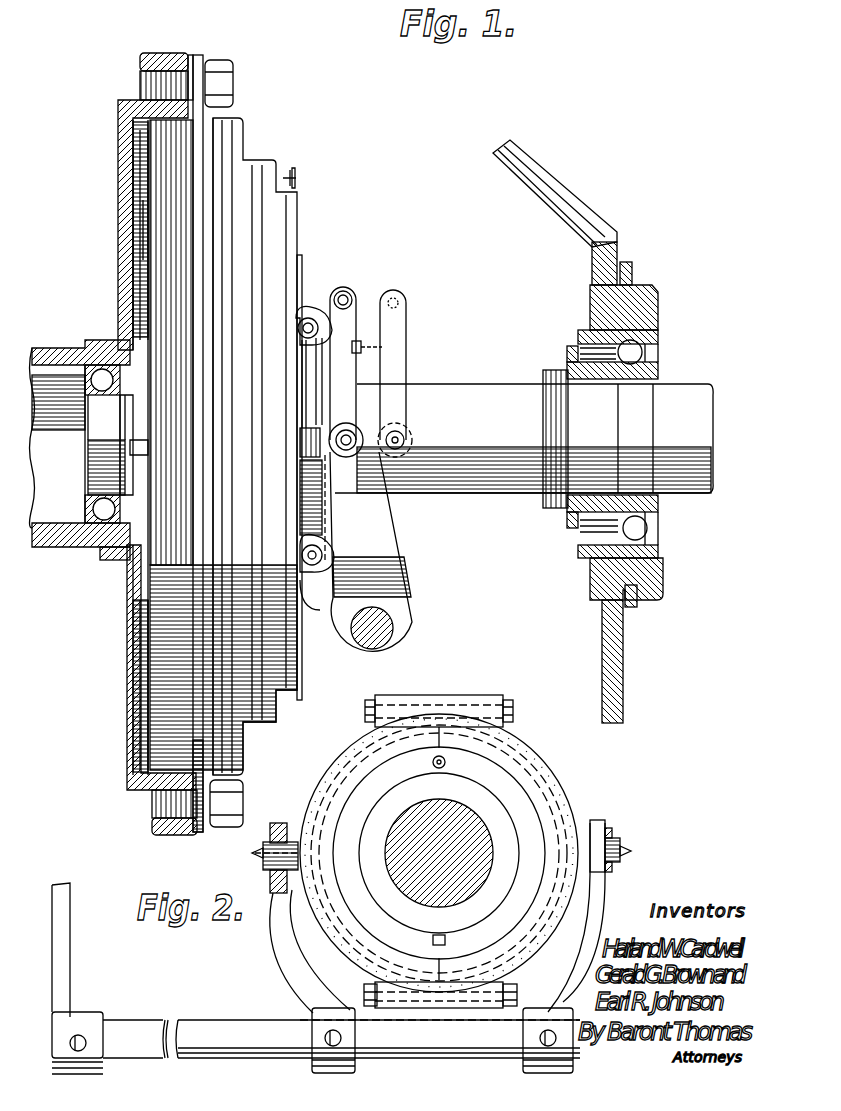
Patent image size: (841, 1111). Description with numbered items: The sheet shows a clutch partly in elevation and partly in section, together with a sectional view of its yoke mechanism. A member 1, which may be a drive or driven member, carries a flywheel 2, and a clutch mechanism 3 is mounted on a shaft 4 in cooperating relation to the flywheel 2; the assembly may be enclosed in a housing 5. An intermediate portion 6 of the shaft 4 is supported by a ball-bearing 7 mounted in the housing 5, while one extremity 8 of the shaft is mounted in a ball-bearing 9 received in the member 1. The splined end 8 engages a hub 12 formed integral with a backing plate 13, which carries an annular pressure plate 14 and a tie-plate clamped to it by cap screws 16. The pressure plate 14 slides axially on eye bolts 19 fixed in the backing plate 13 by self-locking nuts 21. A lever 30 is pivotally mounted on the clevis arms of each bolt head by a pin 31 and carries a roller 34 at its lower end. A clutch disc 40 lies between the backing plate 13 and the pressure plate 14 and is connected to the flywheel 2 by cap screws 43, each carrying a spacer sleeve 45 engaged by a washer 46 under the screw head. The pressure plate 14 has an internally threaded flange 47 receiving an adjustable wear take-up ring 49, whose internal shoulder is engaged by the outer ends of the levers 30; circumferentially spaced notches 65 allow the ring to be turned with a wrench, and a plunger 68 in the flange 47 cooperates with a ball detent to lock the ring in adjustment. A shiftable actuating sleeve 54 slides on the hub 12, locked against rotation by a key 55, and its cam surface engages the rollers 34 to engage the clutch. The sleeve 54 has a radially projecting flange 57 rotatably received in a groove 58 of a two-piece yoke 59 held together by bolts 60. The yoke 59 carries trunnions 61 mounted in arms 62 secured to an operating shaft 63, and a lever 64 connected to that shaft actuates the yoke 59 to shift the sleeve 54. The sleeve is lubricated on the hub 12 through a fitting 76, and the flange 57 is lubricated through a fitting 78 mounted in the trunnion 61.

In FIG. 1, the member 1 is at (55, 548).
In FIG. 1, the flywheel 2 is at (118, 116).
In FIG. 1, the clutch mechanism 3 is at (133, 200).
In FIG. 1, the shaft 4 is at (512, 490).
In FIG. 2, the shaft 4 is at (460, 826).
In FIG. 1, the housing 5 is at (560, 188).
In FIG. 1, the intermediate portion 6 is at (598, 439).
In FIG. 1, the ball-bearing 7 is at (658, 348).
In FIG. 1, the extremity 8 is at (90, 470).
In FIG. 1, the ball-bearing 9 is at (98, 368).
In FIG. 2, the hub 12 is at (392, 798).
In FIG. 1, the backing plate 13 is at (148, 290).
In FIG. 1, the annular pressure plate 14 is at (243, 140).
In FIG. 1, the cap screws 16 is at (133, 315).
In FIG. 1, the eye bolts 19 is at (136, 244).
In FIG. 1, the self-locking nut 21 is at (133, 218).
In FIG. 1, the lever 30 is at (300, 440).
In FIG. 1, the pin 31 is at (315, 338).
In FIG. 1, the roller 34 is at (298, 327).
In FIG. 1, the clutch disc 40 is at (195, 52).
In FIG. 1, the cap screws 43 is at (225, 60).
In FIG. 1, the spacer sleeve 45 is at (180, 52).
In FIG. 1, the washer 46 is at (200, 60).
In FIG. 1, the flange 47 is at (262, 178).
In FIG. 1, the wear take-up ring 49 is at (298, 226).
In FIG. 1, the actuating sleeve 54 is at (322, 376).
In FIG. 2, the actuating sleeve 54 is at (364, 922).
In FIG. 2, the key 55 is at (446, 938).
In FIG. 2, the flange 57 is at (572, 779).
In FIG. 2, the groove 58 is at (540, 752).
In FIG. 1, the yoke 59 is at (358, 312).
In FIG. 2, the yoke 59 is at (488, 695).
In FIG. 1, the bolts 60 is at (346, 290).
In FIG. 2, the bolts 60 is at (513, 710).
In FIG. 1, the trunnions 61 is at (346, 423).
In FIG. 2, the trunnions 61 is at (262, 862).
In FIG. 1, the arms 62 is at (392, 560).
In FIG. 2, the arms 62 is at (290, 966).
In FIG. 1, the operating shaft 63 is at (362, 646).
In FIG. 2, the operating shaft 63 is at (210, 1020).
In FIG. 2, the lever 64 is at (58, 932).
In FIG. 1, the notches 65 is at (302, 258).
In FIG. 1, the plunger 68 is at (296, 177).
In FIG. 1, the fitting 76 is at (382, 350).
In FIG. 2, the fitting 76 is at (446, 763).
In FIG. 1, the fitting 78 is at (392, 424).
In FIG. 2, the fitting 78 is at (250, 856).